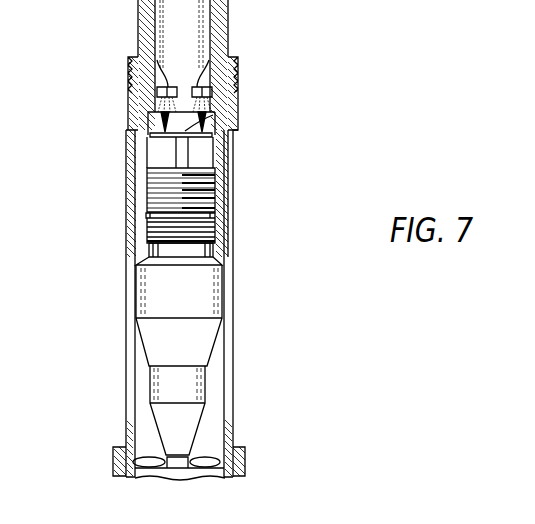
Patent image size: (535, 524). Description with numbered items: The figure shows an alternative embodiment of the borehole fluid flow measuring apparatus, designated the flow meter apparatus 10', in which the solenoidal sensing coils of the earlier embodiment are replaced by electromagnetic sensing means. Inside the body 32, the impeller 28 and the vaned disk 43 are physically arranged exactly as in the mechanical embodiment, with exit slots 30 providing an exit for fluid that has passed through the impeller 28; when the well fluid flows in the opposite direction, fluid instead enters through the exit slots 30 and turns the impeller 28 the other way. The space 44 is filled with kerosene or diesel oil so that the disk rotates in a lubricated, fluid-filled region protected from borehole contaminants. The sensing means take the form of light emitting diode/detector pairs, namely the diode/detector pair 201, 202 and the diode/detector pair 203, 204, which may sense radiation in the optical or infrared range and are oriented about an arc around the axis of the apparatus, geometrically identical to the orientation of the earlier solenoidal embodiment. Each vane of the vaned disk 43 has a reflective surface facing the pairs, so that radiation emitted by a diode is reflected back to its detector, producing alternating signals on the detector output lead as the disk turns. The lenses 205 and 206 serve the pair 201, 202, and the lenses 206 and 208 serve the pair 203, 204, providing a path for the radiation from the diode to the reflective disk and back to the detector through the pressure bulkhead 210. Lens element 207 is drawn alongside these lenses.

The flow meter apparatus 10' is at (138, 268).
The impeller 28 is at (207, 455).
The exit slots 30 is at (231, 332).
The body 32 is at (233, 227).
The vaned disk 43 is at (205, 138).
The space 44 is at (162, 159).
The light emitting diode/detector pair element 201 is at (212, 90).
The light emitting diode/detector pair element 202 is at (229, 43).
The light emitting diode/detector pair element 203 is at (157, 91).
The light emitting diode/detector pair element 204 is at (170, 86).
The lens 205 is at (210, 113).
The lens 206 is at (213, 104).
The left spray jet 207 is at (157, 102).
The lens 208 is at (152, 113).
The pressure bulkhead 210 is at (208, 113).